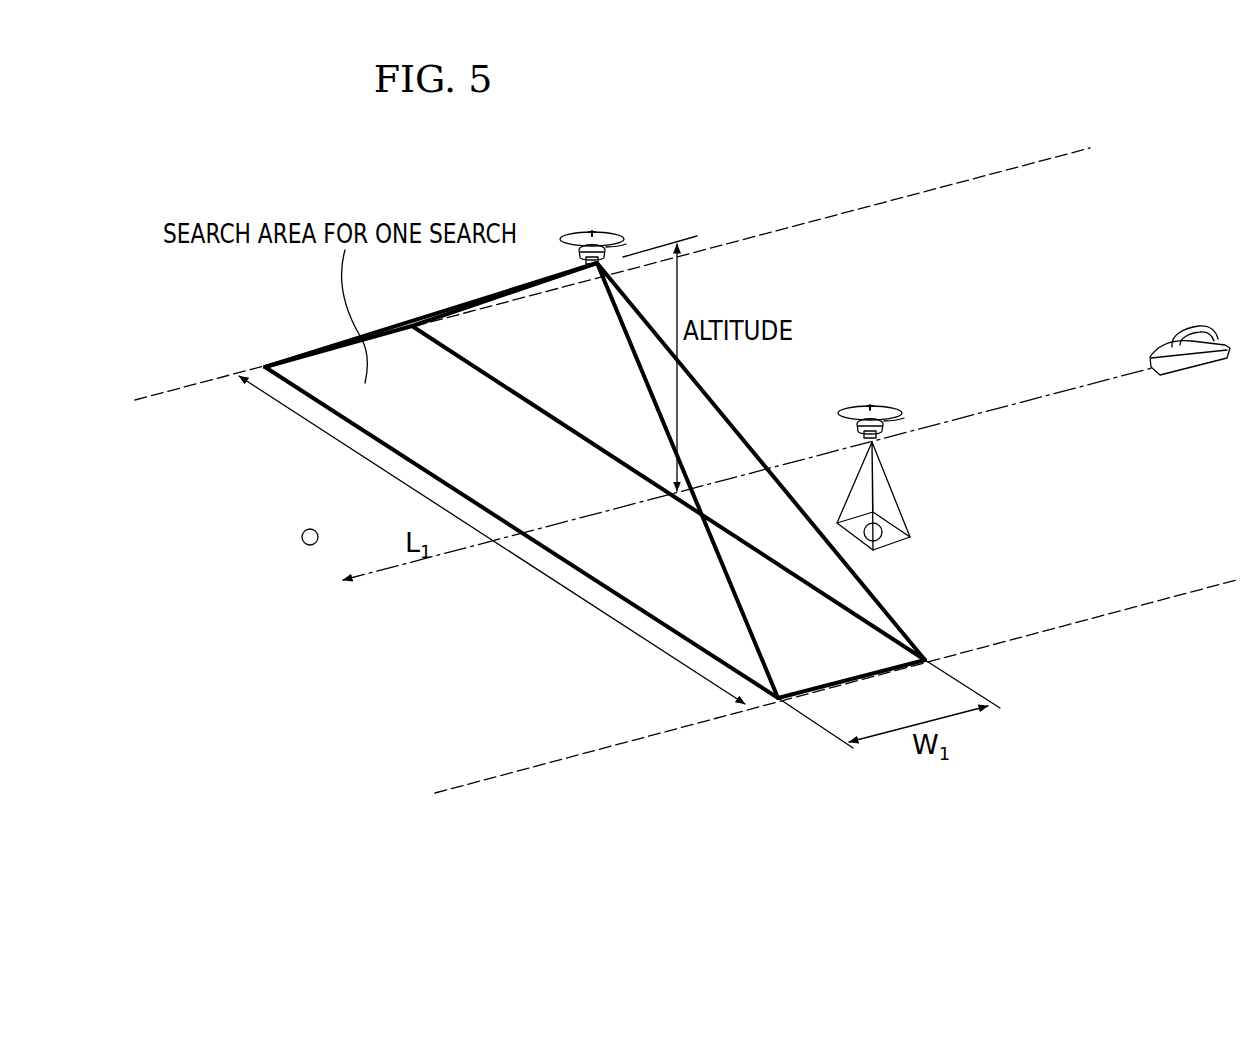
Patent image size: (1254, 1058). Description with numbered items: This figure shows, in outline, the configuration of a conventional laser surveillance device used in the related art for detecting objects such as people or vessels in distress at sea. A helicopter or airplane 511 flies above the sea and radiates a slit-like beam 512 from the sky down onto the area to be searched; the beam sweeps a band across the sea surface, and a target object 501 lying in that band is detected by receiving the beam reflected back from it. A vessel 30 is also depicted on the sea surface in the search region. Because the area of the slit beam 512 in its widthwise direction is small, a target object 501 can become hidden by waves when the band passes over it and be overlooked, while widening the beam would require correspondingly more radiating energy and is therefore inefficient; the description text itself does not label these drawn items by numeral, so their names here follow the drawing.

The ship 30 is at (1190, 337).
The search target 501 is at (304, 528).
The unmanned aerial vehicle (drone) 511 is at (585, 237).
The camera field of view 512 is at (740, 435).